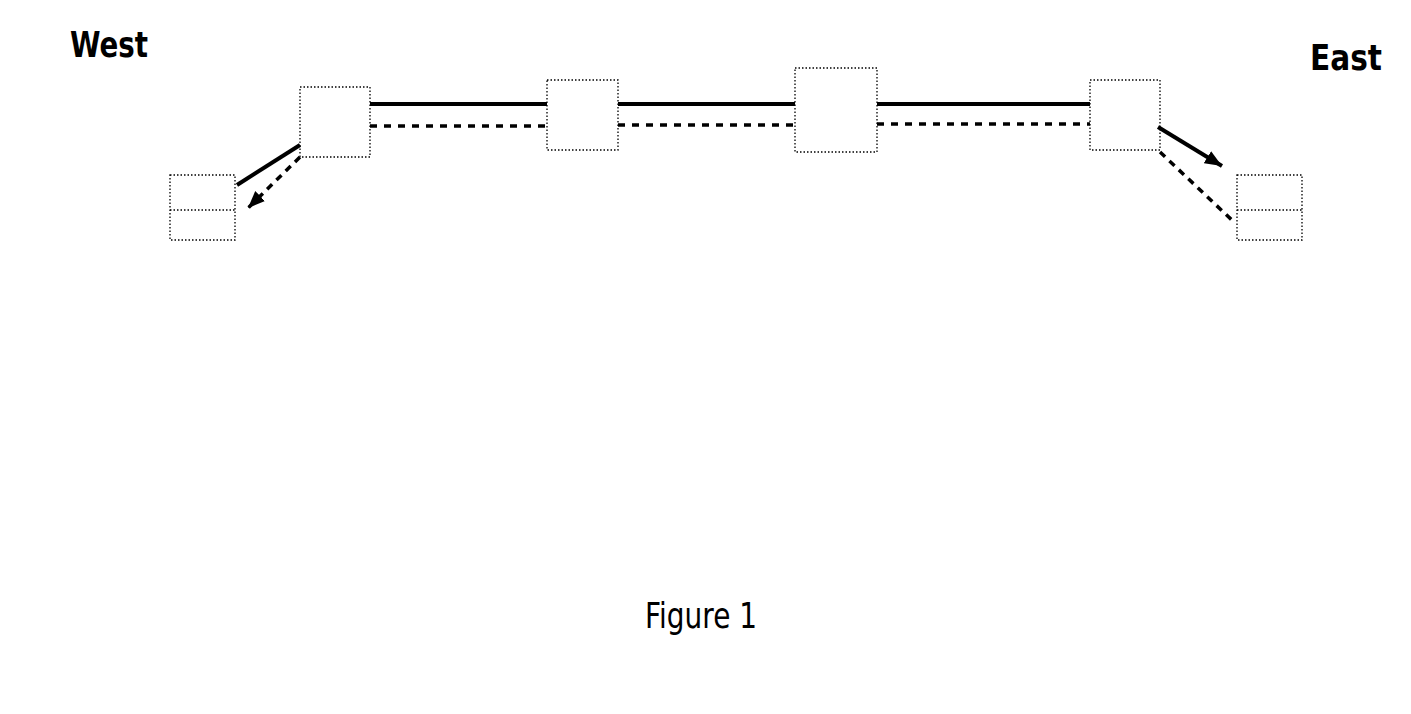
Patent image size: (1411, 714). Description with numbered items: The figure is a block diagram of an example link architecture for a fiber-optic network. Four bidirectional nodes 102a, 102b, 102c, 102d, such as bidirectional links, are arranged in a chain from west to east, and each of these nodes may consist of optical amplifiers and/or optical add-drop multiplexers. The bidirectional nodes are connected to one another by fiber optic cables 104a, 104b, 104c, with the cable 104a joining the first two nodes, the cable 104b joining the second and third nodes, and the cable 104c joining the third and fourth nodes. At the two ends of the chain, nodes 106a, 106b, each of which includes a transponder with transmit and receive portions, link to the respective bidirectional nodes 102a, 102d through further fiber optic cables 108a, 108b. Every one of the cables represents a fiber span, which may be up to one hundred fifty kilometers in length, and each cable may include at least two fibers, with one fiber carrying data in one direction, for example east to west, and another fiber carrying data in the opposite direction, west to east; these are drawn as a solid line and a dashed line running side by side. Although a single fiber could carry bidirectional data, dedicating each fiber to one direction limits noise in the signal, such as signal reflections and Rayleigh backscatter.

The bidirectional node 102a is at (345, 87).
The bidirectional node 102b is at (595, 80).
The bidirectional node 102c is at (852, 68).
The bidirectional node 102d is at (1135, 80).
The fiber optic cable 104a is at (470, 140).
The fiber optic cable 104b is at (740, 140).
The fiber optic cable 104c is at (1024, 140).
The node 106a is at (183, 175).
The node 106b is at (1277, 175).
The fiber optic cable 108a is at (292, 196).
The fiber optic cable 108b is at (1181, 213).